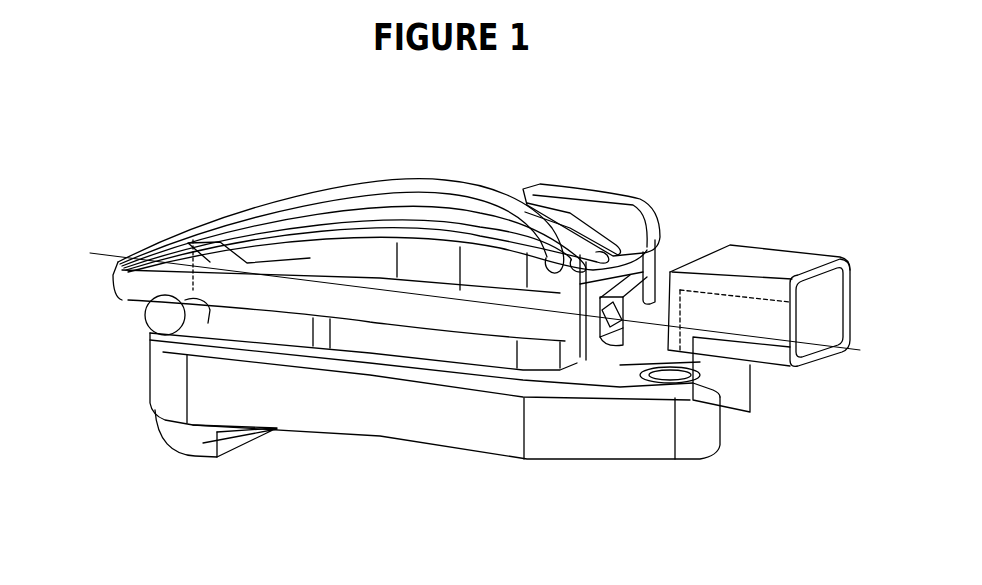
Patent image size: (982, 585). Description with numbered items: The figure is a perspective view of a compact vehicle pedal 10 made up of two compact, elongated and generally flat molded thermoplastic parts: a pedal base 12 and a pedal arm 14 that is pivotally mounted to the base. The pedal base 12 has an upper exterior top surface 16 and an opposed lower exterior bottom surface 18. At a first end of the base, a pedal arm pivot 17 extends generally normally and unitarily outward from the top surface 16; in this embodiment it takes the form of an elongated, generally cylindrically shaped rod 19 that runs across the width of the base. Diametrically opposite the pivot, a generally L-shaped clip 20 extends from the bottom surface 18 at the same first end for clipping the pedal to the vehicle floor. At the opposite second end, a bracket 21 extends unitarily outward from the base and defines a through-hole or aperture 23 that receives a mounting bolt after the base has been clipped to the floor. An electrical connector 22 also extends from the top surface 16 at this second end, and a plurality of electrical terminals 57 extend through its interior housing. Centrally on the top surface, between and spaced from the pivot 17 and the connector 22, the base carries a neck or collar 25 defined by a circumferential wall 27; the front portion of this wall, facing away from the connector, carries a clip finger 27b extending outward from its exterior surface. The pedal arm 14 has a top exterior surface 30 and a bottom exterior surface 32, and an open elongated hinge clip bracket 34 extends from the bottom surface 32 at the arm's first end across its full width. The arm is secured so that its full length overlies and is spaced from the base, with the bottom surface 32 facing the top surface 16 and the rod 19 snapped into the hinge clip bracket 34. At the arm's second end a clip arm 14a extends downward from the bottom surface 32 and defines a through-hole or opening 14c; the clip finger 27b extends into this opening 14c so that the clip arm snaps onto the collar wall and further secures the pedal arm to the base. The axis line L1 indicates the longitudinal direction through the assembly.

The compact vehicle pedal 10 is at (616, 124).
The pedal base 12 is at (531, 458).
The pedal arm 14 is at (306, 190).
The clip arm 14a is at (605, 343).
The through-hole or opening 14c is at (622, 300).
The top exterior surface 16 is at (263, 336).
The pedal arm pivot 17 is at (148, 333).
The bottom exterior surface 18 is at (287, 440).
The cylindrically shaped rod 19 is at (165, 314).
The L-shaped clip 20 is at (192, 447).
The bracket 21 is at (690, 428).
The electrical connector 22 is at (767, 265).
The through-hole or aperture 23 is at (707, 370).
The neck or collar 25 is at (445, 348).
The circumferential wall 27 is at (407, 340).
The clip finger 27b is at (645, 252).
The top exterior surface 30 is at (404, 208).
The bottom exterior surface 32 is at (230, 316).
The hinge clip bracket 34 is at (140, 306).
The electrical terminals 57 is at (794, 305).
The axis L1 is at (473, 288).